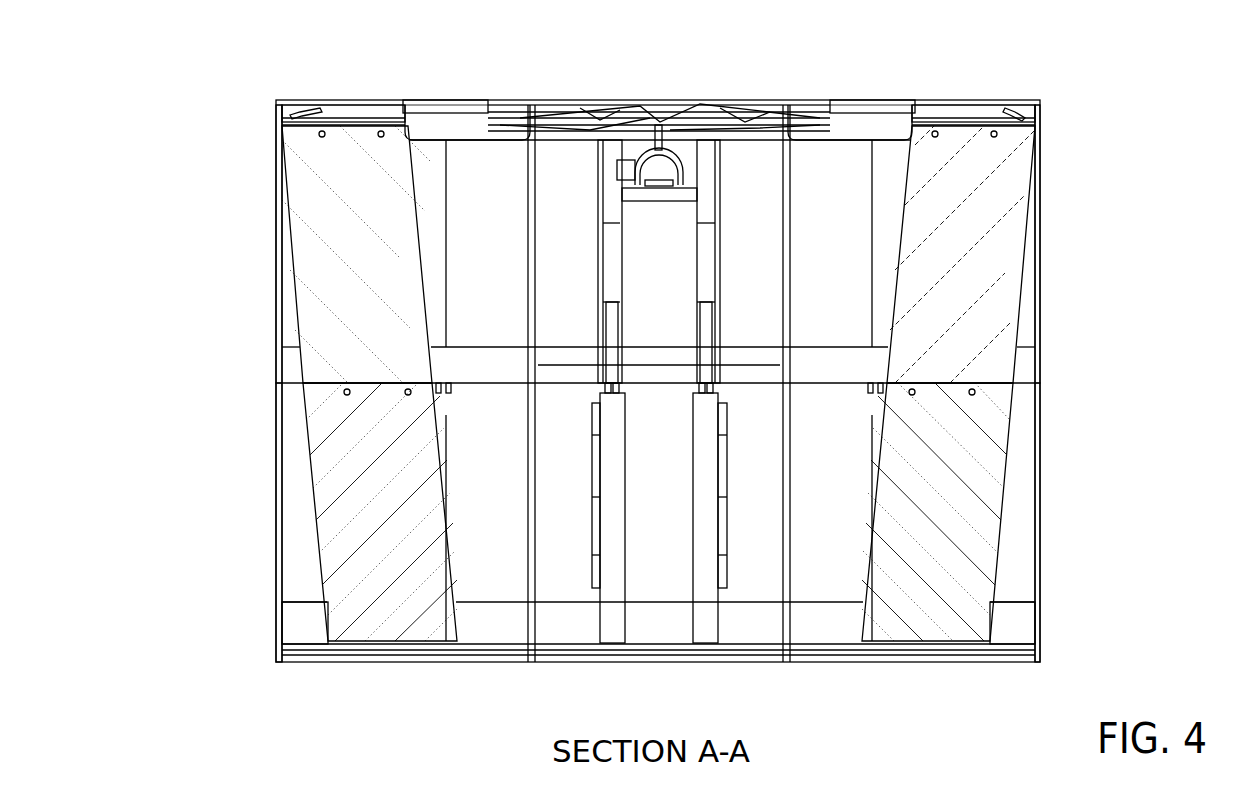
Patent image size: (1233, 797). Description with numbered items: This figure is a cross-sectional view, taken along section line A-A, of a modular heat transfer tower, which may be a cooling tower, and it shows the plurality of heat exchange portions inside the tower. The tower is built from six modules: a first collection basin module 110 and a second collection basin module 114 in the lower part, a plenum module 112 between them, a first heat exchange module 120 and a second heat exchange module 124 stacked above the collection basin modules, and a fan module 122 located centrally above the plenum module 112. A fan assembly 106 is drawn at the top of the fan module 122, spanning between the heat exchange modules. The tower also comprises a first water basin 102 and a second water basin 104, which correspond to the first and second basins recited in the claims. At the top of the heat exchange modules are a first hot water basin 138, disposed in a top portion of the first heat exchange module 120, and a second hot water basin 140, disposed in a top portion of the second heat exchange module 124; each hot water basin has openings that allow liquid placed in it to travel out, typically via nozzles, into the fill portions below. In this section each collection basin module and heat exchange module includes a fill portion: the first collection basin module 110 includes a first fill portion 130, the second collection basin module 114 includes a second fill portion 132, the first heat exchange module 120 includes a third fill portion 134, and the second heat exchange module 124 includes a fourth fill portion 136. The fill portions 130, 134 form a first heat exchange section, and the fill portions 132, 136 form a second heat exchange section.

The first water basin 102 is at (302, 612).
The second water basin 104 is at (1015, 622).
The blade assembly 106 is at (730, 120).
The first collection basin module 110 is at (278, 568).
The plenum module 112 is at (575, 657).
The second collection basin module 114 is at (1040, 540).
The first heat exchange module 120 is at (278, 168).
The fan module 122 is at (658, 122).
The second heat exchange module 124 is at (1040, 292).
The first fill portion 130 is at (355, 478).
The second fill portion 132 is at (972, 492).
The third fill portion 134 is at (322, 275).
The fourth fill portion 136 is at (1000, 208).
The first hot water basin 138 is at (338, 110).
The second hot water basin 140 is at (1010, 108).